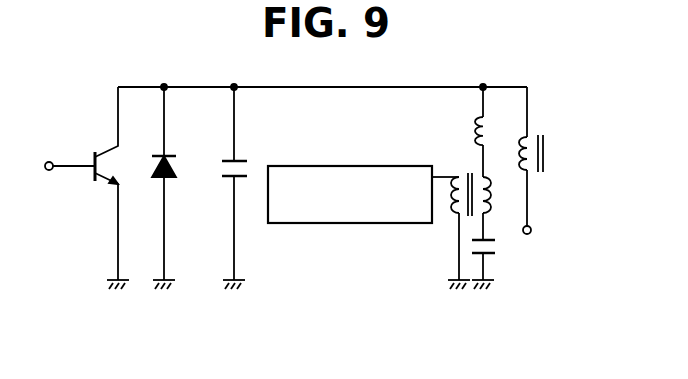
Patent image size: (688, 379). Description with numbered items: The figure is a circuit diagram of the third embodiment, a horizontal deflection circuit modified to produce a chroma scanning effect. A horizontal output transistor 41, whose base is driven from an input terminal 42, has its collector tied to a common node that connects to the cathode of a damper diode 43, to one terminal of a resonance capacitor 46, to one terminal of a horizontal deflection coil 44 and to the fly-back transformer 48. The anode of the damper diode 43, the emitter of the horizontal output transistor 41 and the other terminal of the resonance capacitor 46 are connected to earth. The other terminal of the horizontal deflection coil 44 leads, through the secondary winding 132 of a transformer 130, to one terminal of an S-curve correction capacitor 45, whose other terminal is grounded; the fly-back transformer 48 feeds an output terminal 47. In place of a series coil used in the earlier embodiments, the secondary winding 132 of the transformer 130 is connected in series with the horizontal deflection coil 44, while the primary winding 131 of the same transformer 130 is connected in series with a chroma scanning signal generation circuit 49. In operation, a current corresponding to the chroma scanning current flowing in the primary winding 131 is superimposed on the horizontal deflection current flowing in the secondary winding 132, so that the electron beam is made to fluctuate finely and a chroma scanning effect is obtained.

The horizontal output transistor 41 is at (90, 179).
The input terminal 42 is at (50, 171).
The damper diode 43 is at (166, 178).
The horizontal deflection coil 44 is at (478, 130).
The S-curve correction capacitor 45 is at (496, 250).
The resonance capacitor 46 is at (248, 168).
The output terminal 47 is at (531, 231).
The fly-back transformer 48 is at (546, 152).
The chroma scanning signal generation circuit 49 is at (331, 224).
The transformer 130 is at (473, 172).
The primary winding 131 is at (456, 213).
The secondary winding 132 is at (491, 190).